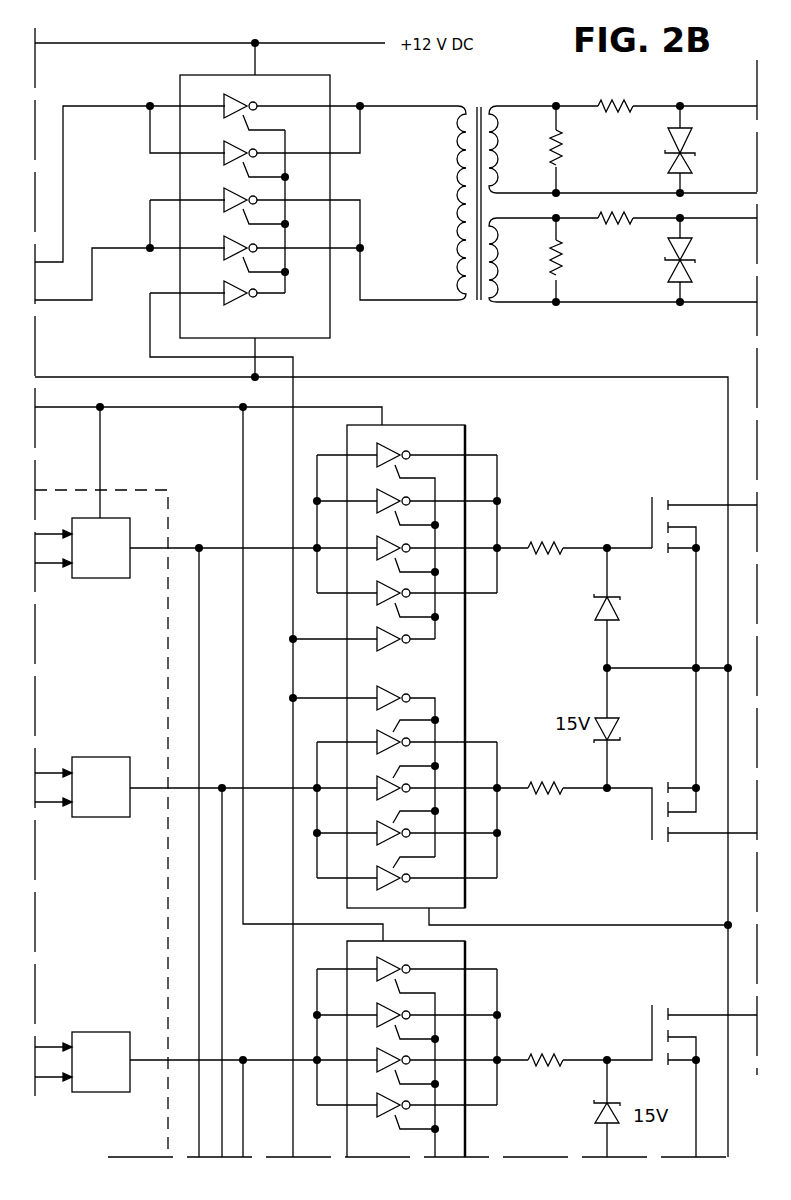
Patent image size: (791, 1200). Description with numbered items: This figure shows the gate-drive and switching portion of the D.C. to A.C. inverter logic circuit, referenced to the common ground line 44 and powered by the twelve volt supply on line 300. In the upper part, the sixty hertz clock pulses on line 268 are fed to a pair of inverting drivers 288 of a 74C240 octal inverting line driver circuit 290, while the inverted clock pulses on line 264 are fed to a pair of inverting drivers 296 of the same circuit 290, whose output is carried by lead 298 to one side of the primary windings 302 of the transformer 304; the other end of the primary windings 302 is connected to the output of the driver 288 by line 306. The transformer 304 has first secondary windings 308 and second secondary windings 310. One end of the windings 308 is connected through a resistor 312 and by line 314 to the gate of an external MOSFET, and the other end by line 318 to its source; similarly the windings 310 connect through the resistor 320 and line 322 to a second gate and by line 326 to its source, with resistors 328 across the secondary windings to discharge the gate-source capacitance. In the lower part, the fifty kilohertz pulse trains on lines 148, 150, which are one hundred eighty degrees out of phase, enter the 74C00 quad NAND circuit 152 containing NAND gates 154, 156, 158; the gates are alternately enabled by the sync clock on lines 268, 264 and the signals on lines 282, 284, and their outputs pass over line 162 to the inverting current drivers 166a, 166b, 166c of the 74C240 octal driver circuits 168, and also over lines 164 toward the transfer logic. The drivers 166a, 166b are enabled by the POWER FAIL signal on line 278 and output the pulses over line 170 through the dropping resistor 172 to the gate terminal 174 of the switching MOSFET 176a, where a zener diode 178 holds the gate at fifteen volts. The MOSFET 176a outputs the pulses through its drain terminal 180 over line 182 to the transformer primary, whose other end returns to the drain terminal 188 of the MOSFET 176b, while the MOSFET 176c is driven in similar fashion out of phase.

The common ground line 44 is at (482, 377).
The line 148 is at (52, 566).
The line 150 is at (50, 805).
The 74C00 quad NAND circuit 152 is at (140, 490).
The NAND gate 154 is at (117, 575).
The NAND gate 156 is at (117, 818).
The NAND gate 158 is at (117, 1093).
The line 162 is at (180, 547).
The lines 164 is at (202, 683).
The inverting current driver 166a is at (392, 447).
The inverting current driver 166b is at (393, 692).
The inverting current driver 166c is at (392, 967).
The 74C240 octal driver circuit 168 is at (467, 433).
The line 170 is at (520, 553).
The dropping resistor 172 is at (562, 547).
The gate terminal 174 is at (647, 502).
The switching MOSFET 176a is at (676, 478).
The MOSFET 176b is at (701, 775).
The MOSFET 176c is at (647, 1010).
The zener diode 178 is at (600, 610).
The drain terminal 180 is at (683, 497).
The line 182 is at (698, 502).
The drain terminal 188 is at (710, 835).
The line 264 is at (110, 106).
The line 268 is at (130, 247).
The line 278 is at (293, 955).
The input line 282 is at (52, 1045).
The input line 284 is at (55, 532).
The inverting drivers 288 is at (232, 197).
The 74C240 octal inverting line driver circuit 290 is at (239, 194).
The inverting drivers 296 is at (240, 103).
The primary lead 298 is at (437, 106).
The line 300 is at (200, 43).
The primary windings 302 is at (455, 158).
The transformer 304 is at (457, 200).
The line 306 is at (413, 302).
The first secondary windings 308 is at (503, 160).
The second secondary windings 310 is at (503, 272).
The resistor 312 is at (608, 111).
The line 314 is at (665, 106).
The line 318 is at (735, 195).
The resistor 320 is at (625, 214).
The line 322 is at (745, 218).
The line 326 is at (640, 303).
The resistors 328 is at (565, 160).